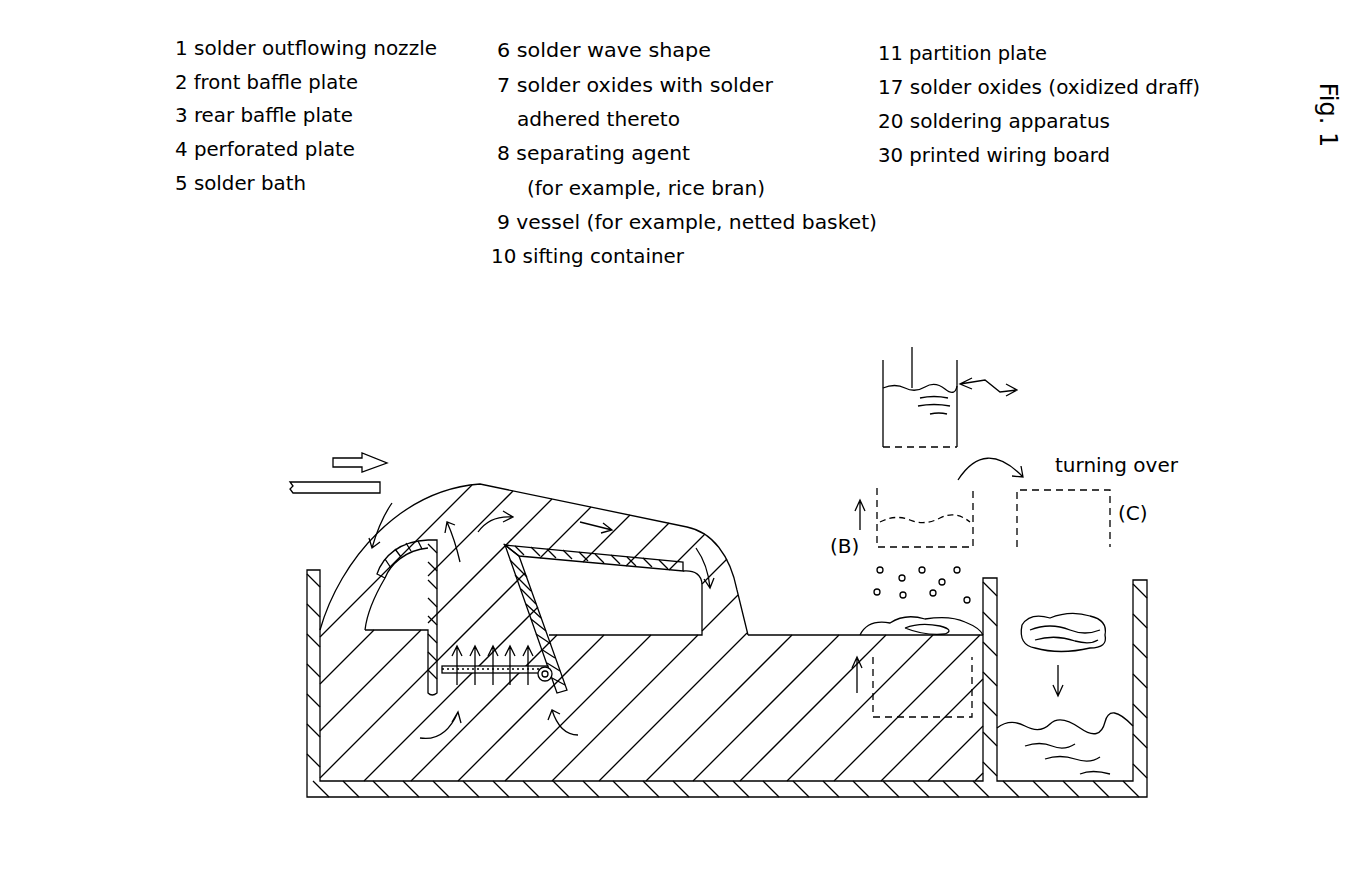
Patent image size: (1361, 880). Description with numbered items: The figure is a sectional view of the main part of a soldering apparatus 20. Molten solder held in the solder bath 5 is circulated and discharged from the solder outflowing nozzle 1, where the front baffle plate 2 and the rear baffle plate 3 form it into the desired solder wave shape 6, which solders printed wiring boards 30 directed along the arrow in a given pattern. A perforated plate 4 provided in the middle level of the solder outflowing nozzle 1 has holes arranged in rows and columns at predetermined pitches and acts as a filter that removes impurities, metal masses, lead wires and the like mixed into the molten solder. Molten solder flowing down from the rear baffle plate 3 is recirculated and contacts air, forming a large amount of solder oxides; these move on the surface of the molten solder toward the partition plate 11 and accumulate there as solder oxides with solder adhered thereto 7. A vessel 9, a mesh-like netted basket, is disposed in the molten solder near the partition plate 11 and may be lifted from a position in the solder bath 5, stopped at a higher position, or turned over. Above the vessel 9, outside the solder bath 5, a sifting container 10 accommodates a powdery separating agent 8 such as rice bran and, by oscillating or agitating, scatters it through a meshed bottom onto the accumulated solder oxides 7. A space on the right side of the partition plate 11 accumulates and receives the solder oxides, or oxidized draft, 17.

The solder outflowing nozzle 1 is at (445, 647).
The front baffle plate 2 is at (423, 537).
The rear baffle plate 3 is at (570, 552).
The perforated plate 4 is at (497, 683).
The solder bath 5 is at (372, 786).
The solder wave shape 6 is at (480, 497).
The solder oxides with solder adhered thereto 7 is at (858, 628).
The separating agent 8 is at (876, 570).
The vessel 9 is at (923, 718).
The sifting container 10 is at (883, 380).
The partition plate 11 is at (997, 610).
The solder oxides (oxidized draft) 17 is at (1068, 620).
The soldering apparatus 20 is at (1076, 838).
The printed wiring board 30 is at (320, 482).